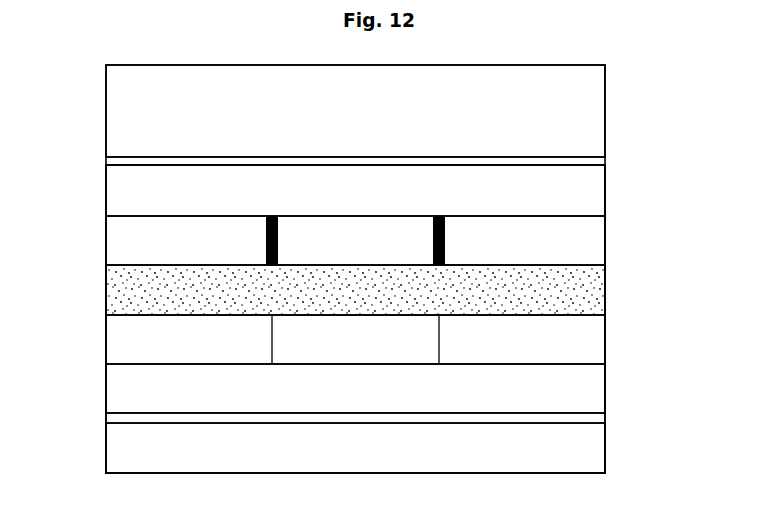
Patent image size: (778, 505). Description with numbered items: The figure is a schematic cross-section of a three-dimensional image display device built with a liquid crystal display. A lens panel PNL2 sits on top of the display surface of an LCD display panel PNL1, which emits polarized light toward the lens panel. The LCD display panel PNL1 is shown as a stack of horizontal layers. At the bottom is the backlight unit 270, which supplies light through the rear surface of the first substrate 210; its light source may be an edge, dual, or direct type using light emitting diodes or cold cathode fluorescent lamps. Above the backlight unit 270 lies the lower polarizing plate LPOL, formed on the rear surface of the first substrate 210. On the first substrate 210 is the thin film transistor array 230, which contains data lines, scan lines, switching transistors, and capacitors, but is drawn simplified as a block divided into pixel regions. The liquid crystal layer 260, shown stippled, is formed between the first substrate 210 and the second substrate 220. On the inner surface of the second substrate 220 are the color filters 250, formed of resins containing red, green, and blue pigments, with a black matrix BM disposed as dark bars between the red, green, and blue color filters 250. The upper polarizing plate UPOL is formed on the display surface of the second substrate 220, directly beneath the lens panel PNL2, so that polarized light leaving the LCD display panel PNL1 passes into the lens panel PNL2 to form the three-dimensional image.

The lens panel PNL2 is at (106, 110).
The upper polarizing plate UPOL is at (106, 161).
The second substrate 220 is at (596, 189).
The color filters 250 is at (596, 241).
The black matrix BM is at (270, 266).
The liquid crystal layer 260 is at (596, 293).
The thin film transistor array 230 is at (596, 339).
The first substrate 210 is at (596, 389).
The lower polarizing plate LPOL is at (106, 419).
The backlight unit 270 is at (596, 444).
The LCD display panel PNL1 is at (697, 165).